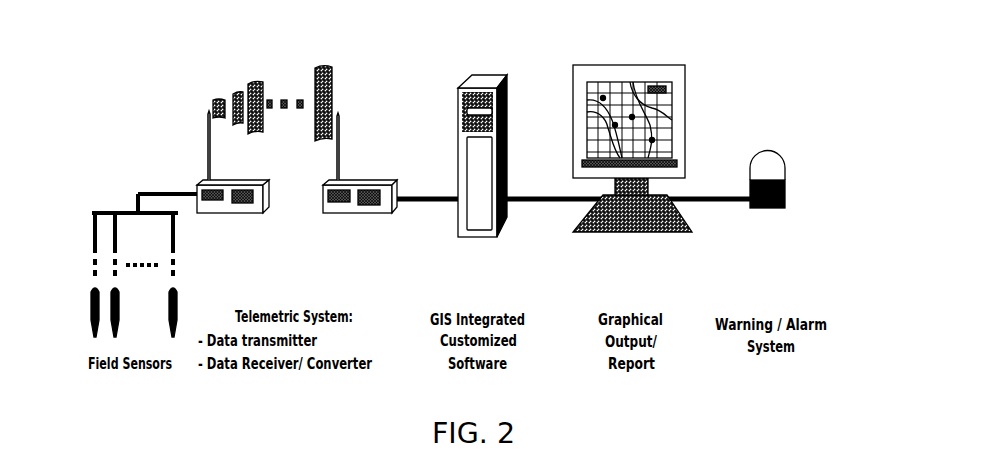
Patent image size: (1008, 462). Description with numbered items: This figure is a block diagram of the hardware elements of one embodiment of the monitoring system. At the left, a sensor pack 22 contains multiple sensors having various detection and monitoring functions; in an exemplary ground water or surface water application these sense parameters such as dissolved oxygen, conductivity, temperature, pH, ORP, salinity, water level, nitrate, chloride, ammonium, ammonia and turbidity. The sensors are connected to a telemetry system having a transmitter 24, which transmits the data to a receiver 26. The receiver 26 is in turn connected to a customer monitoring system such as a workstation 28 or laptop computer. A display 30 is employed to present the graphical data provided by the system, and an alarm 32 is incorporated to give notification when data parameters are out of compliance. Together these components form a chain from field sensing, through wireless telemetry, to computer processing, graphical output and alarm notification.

The sensor pack 22 is at (100, 210).
The transmitter 24 is at (220, 213).
The receiver 26 is at (343, 213).
The workstation 28 is at (490, 75).
The display 30 is at (615, 65).
The alarm 32 is at (762, 150).